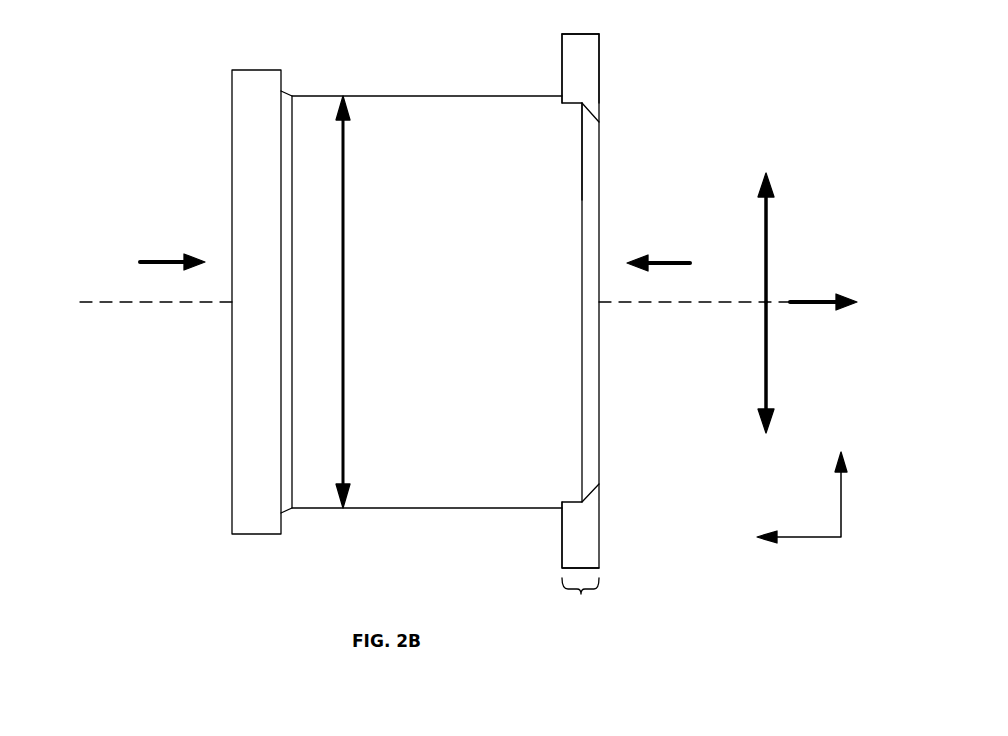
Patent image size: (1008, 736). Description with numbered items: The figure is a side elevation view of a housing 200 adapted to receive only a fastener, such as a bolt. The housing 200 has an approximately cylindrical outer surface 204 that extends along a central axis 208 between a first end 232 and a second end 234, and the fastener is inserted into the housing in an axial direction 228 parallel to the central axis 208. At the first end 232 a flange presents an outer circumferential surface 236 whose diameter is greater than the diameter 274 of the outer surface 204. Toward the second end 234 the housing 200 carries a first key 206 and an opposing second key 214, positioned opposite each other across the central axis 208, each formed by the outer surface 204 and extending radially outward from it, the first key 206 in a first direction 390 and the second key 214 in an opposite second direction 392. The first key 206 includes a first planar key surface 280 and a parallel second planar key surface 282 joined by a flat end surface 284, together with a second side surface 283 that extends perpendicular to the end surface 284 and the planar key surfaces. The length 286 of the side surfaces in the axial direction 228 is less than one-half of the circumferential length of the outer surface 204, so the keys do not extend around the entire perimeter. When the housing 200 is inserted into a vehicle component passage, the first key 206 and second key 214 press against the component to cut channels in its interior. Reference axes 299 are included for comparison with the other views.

The housing 200 is at (210, 43).
The outer surface 204 is at (547, 117).
The first key 206 is at (599, 34).
The central axis 208 is at (115, 300).
The second key 214 is at (585, 530).
The axial direction 228 is at (818, 300).
The first end 232 is at (167, 262).
The second end 234 is at (668, 262).
The outer circumferential surface 236 is at (258, 157).
The diameter 274 is at (342, 410).
The first planar key surface 280 is at (560, 65).
The second planar key surface 282 is at (599, 52).
The second side surface 283 is at (582, 70).
The end surface 284 is at (578, 34).
The length 286 is at (580, 598).
The reference axes 299 is at (786, 492).
The first direction 390 is at (768, 226).
The second direction 392 is at (768, 378).